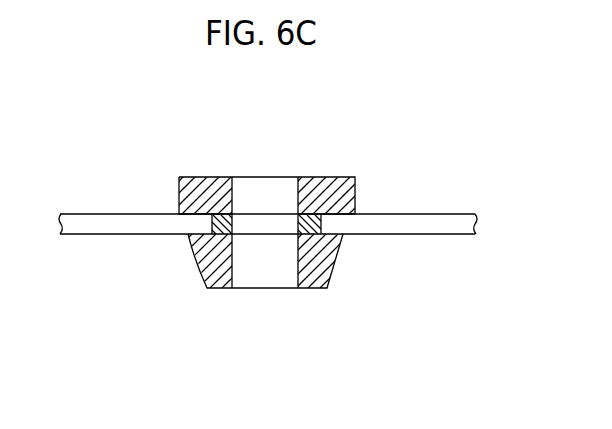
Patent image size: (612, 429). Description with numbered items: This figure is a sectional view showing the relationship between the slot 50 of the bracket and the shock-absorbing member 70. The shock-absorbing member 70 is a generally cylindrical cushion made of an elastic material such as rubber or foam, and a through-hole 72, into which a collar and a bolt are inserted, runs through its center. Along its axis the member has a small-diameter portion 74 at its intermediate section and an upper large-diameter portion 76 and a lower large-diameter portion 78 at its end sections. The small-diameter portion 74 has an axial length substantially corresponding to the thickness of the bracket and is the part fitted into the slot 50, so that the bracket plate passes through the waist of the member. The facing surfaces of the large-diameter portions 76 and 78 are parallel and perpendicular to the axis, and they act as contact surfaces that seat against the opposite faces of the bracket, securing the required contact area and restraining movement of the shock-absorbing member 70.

The slot 50 is at (125, 215).
The shock-absorbing member 70 is at (251, 223).
The through-hole 72 is at (296, 263).
The small-diameter portion 74 is at (313, 238).
The upper large-diameter portion 76 is at (179, 193).
The lower large-diameter portion 78 is at (217, 289).